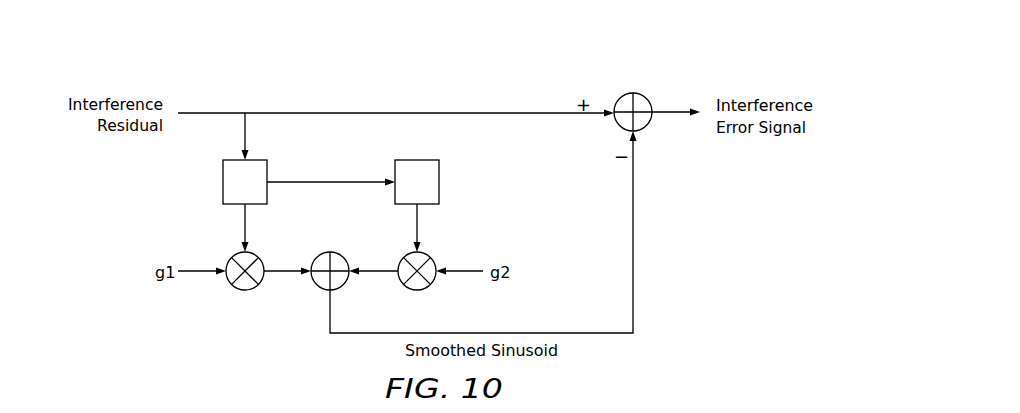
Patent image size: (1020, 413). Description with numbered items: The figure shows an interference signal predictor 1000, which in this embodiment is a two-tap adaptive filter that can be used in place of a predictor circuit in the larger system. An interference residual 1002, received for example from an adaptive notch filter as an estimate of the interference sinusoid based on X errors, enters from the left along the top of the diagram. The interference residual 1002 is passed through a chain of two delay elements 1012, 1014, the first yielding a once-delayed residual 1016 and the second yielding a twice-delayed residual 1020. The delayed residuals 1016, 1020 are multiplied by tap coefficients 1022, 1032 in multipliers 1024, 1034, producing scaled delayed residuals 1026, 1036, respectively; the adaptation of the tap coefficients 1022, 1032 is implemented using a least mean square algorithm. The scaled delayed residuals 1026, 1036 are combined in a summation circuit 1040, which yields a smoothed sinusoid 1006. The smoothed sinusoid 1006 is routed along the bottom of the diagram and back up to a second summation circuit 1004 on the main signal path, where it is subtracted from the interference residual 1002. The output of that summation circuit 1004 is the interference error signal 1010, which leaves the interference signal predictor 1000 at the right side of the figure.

The interference signal predictor 1000 is at (106, 70).
The interference residual 1002 is at (202, 112).
The summation circuit 1004 is at (677, 88).
The smoothed sinusoid 1006 is at (578, 333).
The interference error signal 1010 is at (668, 115).
The delay element 1012 is at (223, 182).
The delay element 1014 is at (465, 170).
The once-delayed residual 1016 is at (245, 218).
The twice-delayed residual 1020 is at (417, 218).
The tap coefficient 1022 is at (193, 271).
The multiplier 1024 is at (232, 258).
The scaled delayed residual 1026 is at (278, 271).
The tap coefficient 1032 is at (468, 271).
The multiplier 1034 is at (430, 258).
The scaled delayed residual 1036 is at (380, 271).
The summation circuit 1040 is at (322, 290).